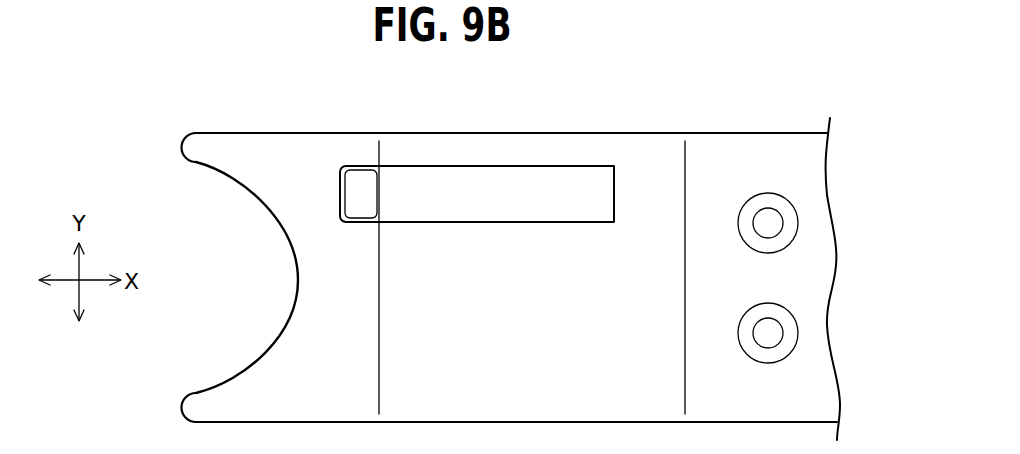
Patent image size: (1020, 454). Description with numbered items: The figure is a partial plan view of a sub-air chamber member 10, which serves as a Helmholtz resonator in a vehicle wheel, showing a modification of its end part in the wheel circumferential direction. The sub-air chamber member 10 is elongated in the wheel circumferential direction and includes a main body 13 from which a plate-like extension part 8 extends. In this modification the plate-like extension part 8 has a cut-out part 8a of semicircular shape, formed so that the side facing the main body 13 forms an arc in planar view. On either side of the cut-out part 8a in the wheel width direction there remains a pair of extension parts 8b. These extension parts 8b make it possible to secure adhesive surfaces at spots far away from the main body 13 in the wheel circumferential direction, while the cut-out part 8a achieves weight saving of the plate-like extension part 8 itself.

The plate-like extension part 8 is at (480, 256).
The cut-out part 8a is at (295, 280).
The extension parts 8b is at (194, 147).
The sub-air chamber member 10 is at (560, 118).
The main body 13 is at (748, 132).